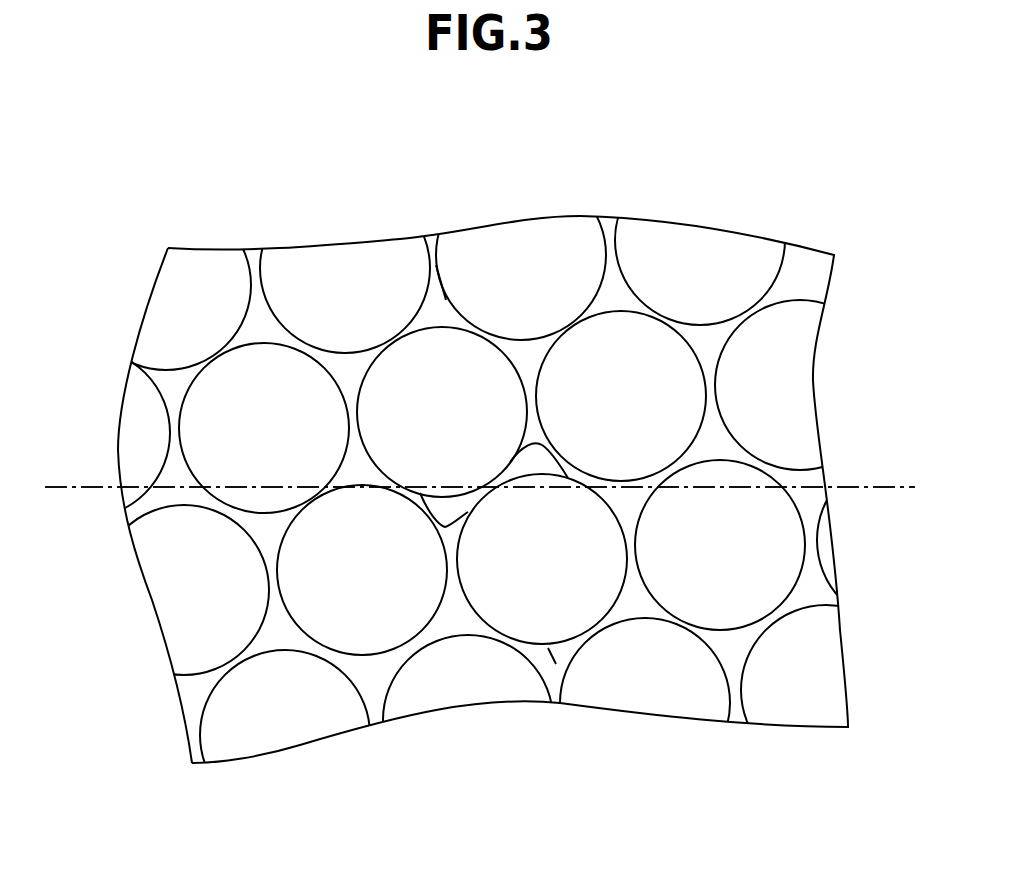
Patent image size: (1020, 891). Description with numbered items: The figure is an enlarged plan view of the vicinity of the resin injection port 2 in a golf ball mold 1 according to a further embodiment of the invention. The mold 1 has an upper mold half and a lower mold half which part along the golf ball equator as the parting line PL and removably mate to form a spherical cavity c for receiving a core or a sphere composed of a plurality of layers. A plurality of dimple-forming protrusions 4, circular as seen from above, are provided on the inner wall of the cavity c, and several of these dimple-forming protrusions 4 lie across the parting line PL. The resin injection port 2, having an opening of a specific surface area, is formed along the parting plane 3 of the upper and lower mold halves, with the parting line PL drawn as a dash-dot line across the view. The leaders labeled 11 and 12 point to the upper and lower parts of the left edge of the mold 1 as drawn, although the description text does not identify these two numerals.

The golf ball mold 1 is at (830, 226).
The resin injection port 2 is at (452, 512).
The parting plane 3 is at (807, 487).
The dimple-forming protrusion 4 is at (362, 281).
The spherical cavity c is at (446, 307).
The parting line PL is at (112, 487).
The upper portion 11 is at (133, 367).
The lower portion 12 is at (190, 692).